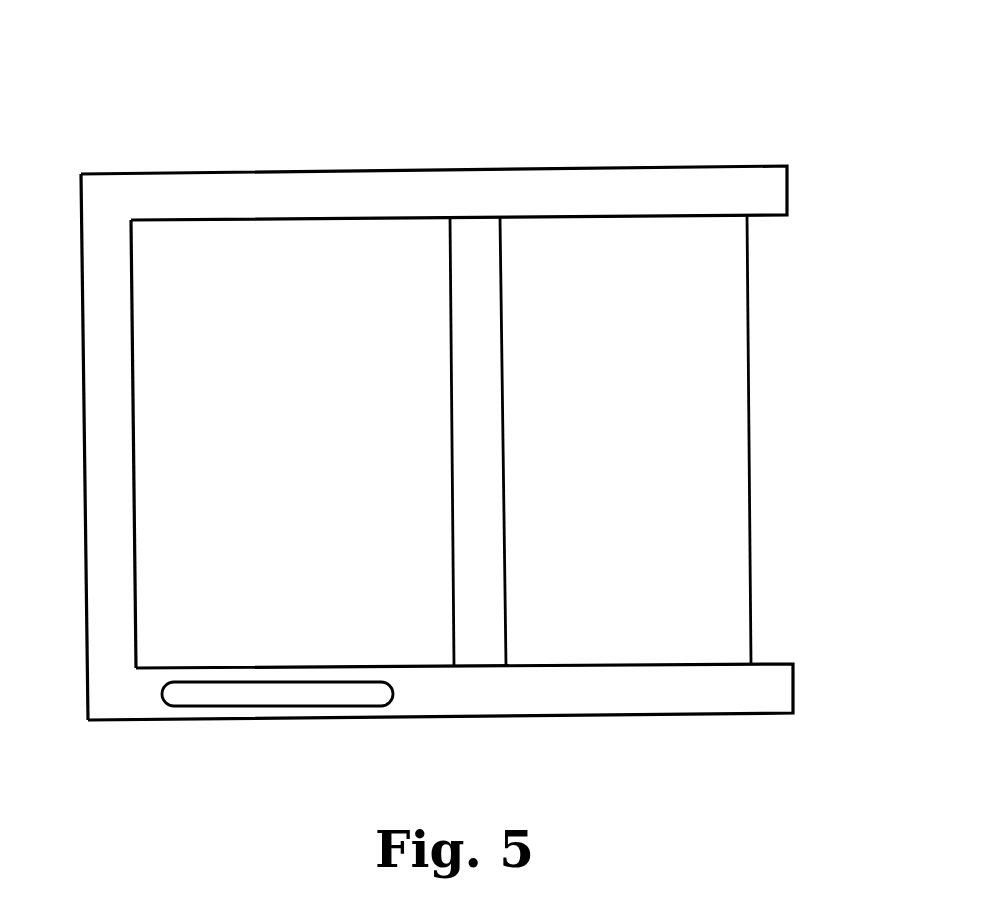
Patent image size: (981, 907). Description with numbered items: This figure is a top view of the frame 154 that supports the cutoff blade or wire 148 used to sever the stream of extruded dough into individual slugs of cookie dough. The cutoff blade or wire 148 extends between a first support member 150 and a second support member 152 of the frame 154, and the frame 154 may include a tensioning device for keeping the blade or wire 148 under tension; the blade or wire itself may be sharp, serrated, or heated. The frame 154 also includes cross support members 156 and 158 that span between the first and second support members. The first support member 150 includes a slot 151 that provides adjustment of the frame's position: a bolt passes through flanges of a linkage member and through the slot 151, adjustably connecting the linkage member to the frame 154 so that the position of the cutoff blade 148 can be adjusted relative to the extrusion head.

The frame 154 is at (492, 79).
The second support member 152 is at (561, 180).
The cross support member 156 is at (96, 568).
The first support member 150 is at (637, 704).
The cutoff blade or wire 148 is at (750, 447).
The cross support member 158 is at (464, 562).
The slot 151 is at (278, 698).